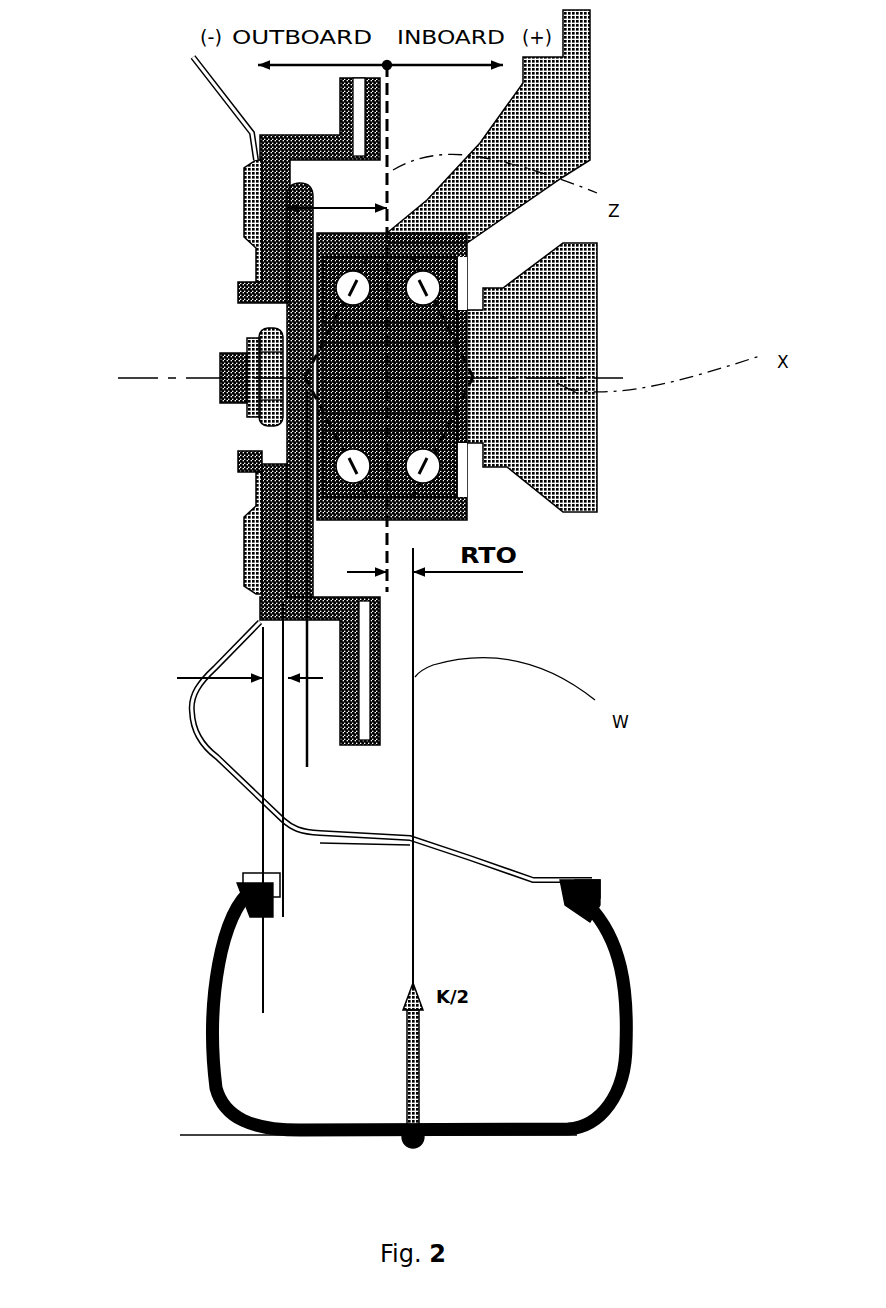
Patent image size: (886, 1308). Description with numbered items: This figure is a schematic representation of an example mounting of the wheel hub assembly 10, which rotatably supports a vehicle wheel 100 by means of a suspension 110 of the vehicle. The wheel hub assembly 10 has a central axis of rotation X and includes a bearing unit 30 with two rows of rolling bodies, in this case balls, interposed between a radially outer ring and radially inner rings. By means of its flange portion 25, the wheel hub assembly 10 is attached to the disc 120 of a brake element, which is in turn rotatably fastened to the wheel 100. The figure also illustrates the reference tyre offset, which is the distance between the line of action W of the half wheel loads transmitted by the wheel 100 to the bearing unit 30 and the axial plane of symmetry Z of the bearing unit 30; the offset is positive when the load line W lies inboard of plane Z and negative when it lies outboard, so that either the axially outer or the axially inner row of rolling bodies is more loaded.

The wheel hub assembly 10 is at (185, 326).
The flange portion 25 is at (277, 216).
The bearing unit 30 is at (474, 492).
The vehicle wheel 100 is at (160, 943).
The suspension 110 is at (614, 100).
The disc of a brake element 120 is at (173, 550).